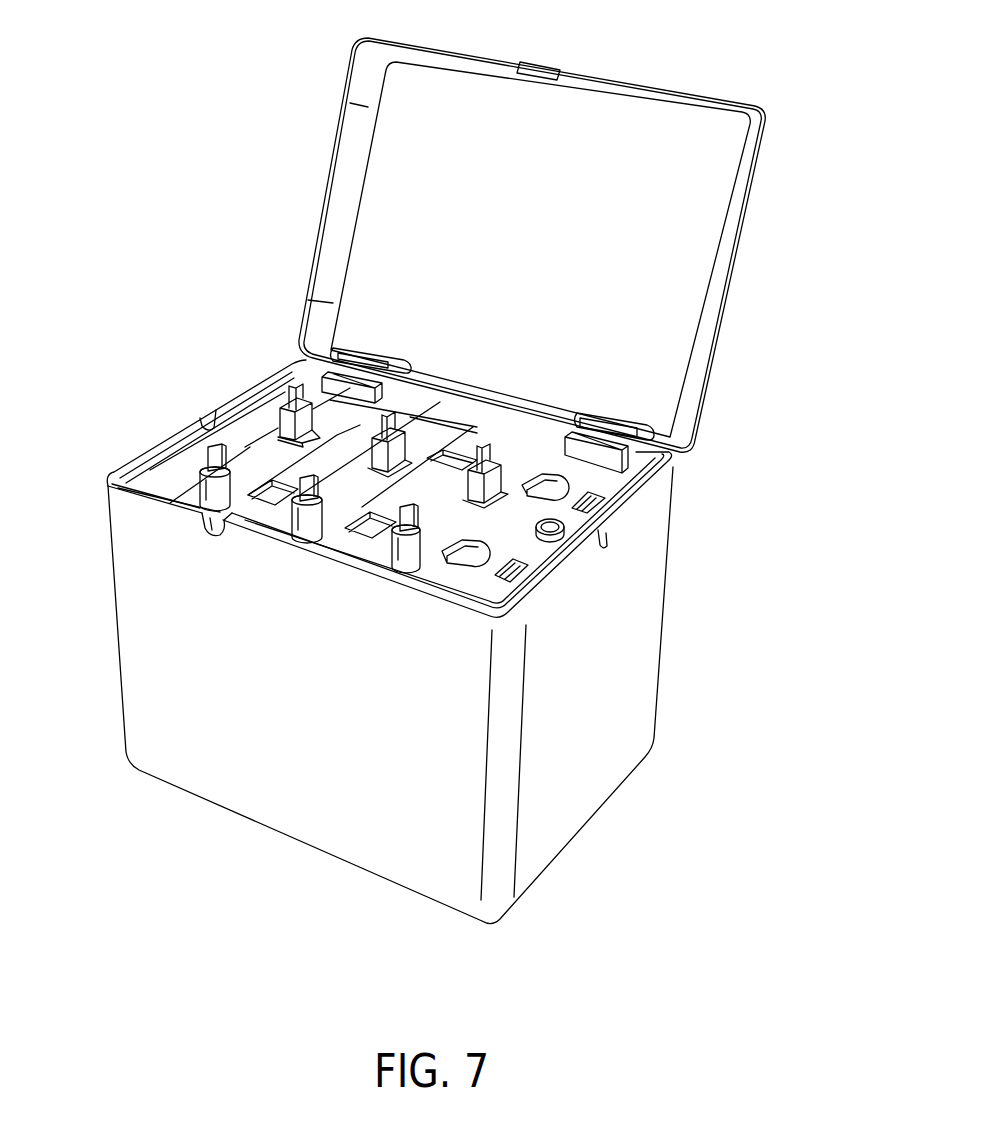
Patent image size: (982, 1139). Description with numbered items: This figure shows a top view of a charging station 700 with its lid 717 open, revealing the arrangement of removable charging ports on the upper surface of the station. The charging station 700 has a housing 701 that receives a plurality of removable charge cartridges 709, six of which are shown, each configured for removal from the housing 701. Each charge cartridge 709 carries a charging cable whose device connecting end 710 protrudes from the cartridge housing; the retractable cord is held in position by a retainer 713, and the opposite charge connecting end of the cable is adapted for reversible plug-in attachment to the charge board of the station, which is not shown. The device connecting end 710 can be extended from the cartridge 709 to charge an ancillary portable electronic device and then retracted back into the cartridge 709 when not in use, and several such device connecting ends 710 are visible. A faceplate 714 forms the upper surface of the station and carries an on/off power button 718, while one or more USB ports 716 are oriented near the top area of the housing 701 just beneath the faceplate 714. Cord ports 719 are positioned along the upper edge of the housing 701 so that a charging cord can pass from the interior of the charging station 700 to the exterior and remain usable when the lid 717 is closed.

The charging station 700 is at (163, 180).
The housing 701 is at (646, 680).
The charge cartridge 709 is at (333, 512).
The device connecting end 710 is at (213, 462).
The retainer 713 is at (220, 488).
The faceplate 714 is at (483, 588).
The USB port 716 is at (536, 578).
The lid 717 is at (750, 209).
The on/off power button 718 is at (563, 537).
The cord port 719 is at (208, 402).